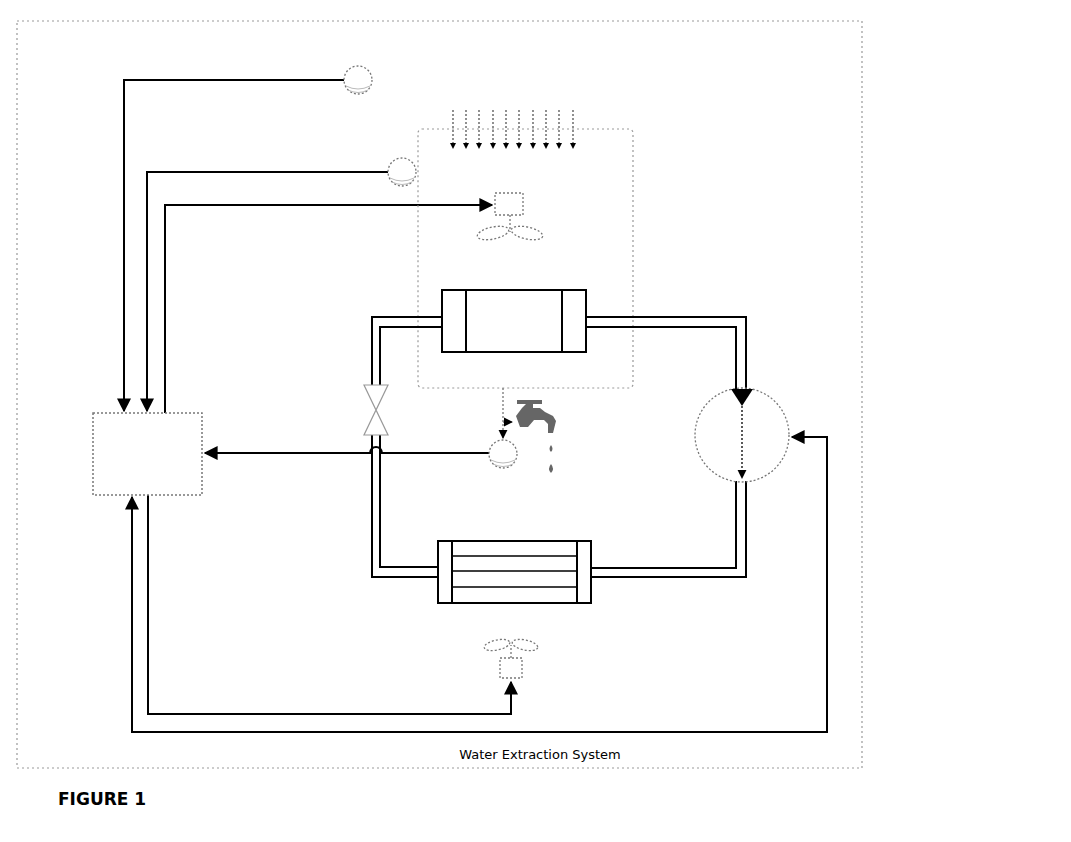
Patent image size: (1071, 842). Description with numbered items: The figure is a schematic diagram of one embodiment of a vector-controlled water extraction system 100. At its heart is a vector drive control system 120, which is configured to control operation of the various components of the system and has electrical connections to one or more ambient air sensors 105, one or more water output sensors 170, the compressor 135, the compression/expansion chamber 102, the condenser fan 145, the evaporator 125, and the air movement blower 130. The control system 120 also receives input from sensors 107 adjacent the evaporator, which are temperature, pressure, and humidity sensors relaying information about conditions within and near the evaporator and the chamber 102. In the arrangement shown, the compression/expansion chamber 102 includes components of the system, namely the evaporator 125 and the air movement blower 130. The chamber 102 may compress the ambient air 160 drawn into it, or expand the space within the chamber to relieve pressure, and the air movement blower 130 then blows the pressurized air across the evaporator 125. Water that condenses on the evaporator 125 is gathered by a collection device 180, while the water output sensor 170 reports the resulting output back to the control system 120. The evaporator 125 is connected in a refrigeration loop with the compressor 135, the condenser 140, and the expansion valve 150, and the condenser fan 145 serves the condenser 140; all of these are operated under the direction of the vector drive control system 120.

The water extraction system 100 is at (866, 121).
The compression/expansion chamber 102 is at (418, 248).
The ambient air sensors 105 is at (348, 70).
The sensors 107 is at (404, 158).
The vector drive control system 120 is at (93, 440).
The evaporator 125 is at (442, 310).
The air movement blower 130 is at (525, 198).
The compressor 135 is at (697, 425).
The condenser 140 is at (438, 556).
The condenser fan 145 is at (500, 665).
The expansion valve 150 is at (366, 420).
The ambient air 160 is at (527, 90).
The water output sensor 170 is at (492, 444).
The collection device 180 is at (560, 425).